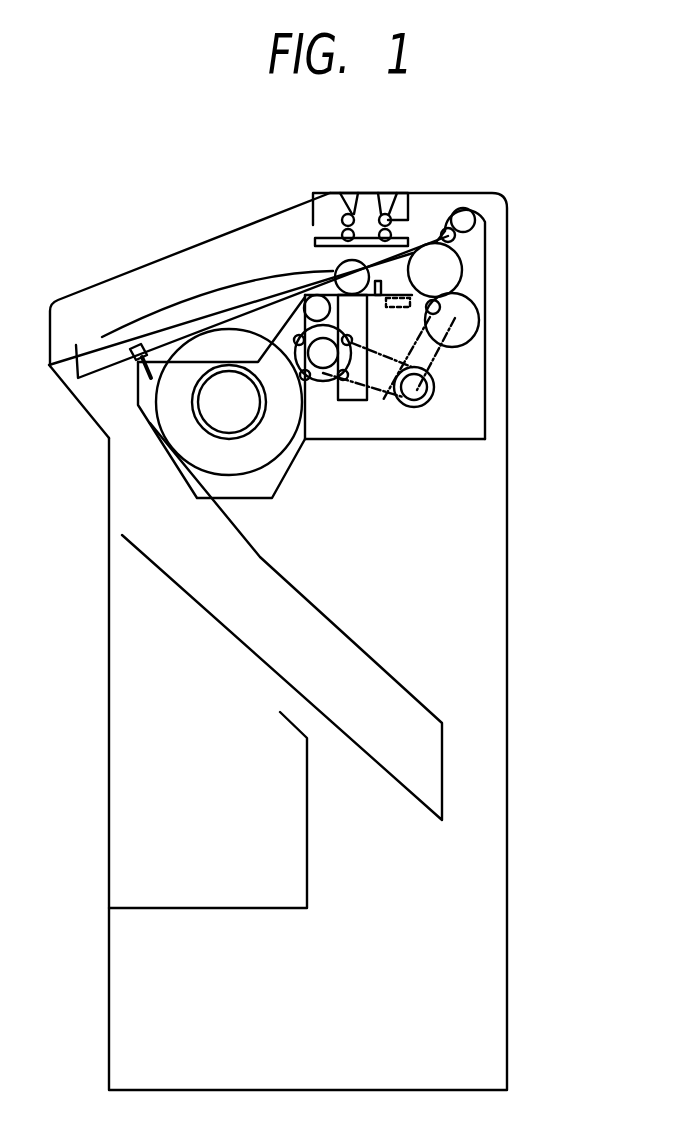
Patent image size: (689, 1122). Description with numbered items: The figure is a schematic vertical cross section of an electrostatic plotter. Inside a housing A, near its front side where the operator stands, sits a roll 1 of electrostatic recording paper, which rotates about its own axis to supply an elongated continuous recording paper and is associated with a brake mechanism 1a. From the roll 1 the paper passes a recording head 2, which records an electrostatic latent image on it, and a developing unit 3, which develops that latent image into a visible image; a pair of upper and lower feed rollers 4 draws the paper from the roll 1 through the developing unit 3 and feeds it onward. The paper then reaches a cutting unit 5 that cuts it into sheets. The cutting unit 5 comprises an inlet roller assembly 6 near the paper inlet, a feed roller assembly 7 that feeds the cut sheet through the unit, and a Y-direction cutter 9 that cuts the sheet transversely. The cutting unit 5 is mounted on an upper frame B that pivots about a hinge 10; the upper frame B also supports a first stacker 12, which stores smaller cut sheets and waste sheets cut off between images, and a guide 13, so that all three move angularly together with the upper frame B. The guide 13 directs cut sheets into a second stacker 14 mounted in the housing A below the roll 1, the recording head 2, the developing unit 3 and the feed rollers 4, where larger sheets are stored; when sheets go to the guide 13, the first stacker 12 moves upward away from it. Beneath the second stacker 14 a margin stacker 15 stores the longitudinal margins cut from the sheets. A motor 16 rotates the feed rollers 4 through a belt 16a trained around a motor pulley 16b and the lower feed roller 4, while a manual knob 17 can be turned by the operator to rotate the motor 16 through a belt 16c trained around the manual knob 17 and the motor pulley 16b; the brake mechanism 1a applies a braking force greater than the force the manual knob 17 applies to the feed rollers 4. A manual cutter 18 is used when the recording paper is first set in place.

The roll of electrostatic recording paper 1 is at (140, 436).
The brake mechanism 1a is at (247, 418).
The recording head 2 is at (352, 392).
The developing unit 3 is at (481, 327).
The feed rollers 4 is at (445, 268).
The cutting unit 5 is at (378, 192).
The inlet roller assembly 6 is at (396, 192).
The feed roller assembly 7 is at (343, 192).
The Y-direction cutter 9 is at (353, 192).
The hinge 10 is at (462, 207).
The first stacker 12 is at (180, 301).
The guide 13 is at (240, 300).
The second stacker 14 is at (368, 655).
The margin stacker 15 is at (160, 909).
The motor 16 is at (437, 397).
The belt 16a is at (458, 352).
The motor pulley 16b is at (417, 392).
The belt 16c is at (388, 412).
The manual knob 17 is at (315, 385).
The manual cutter 18 is at (132, 348).
The housing A is at (507, 690).
The upper frame B is at (262, 217).